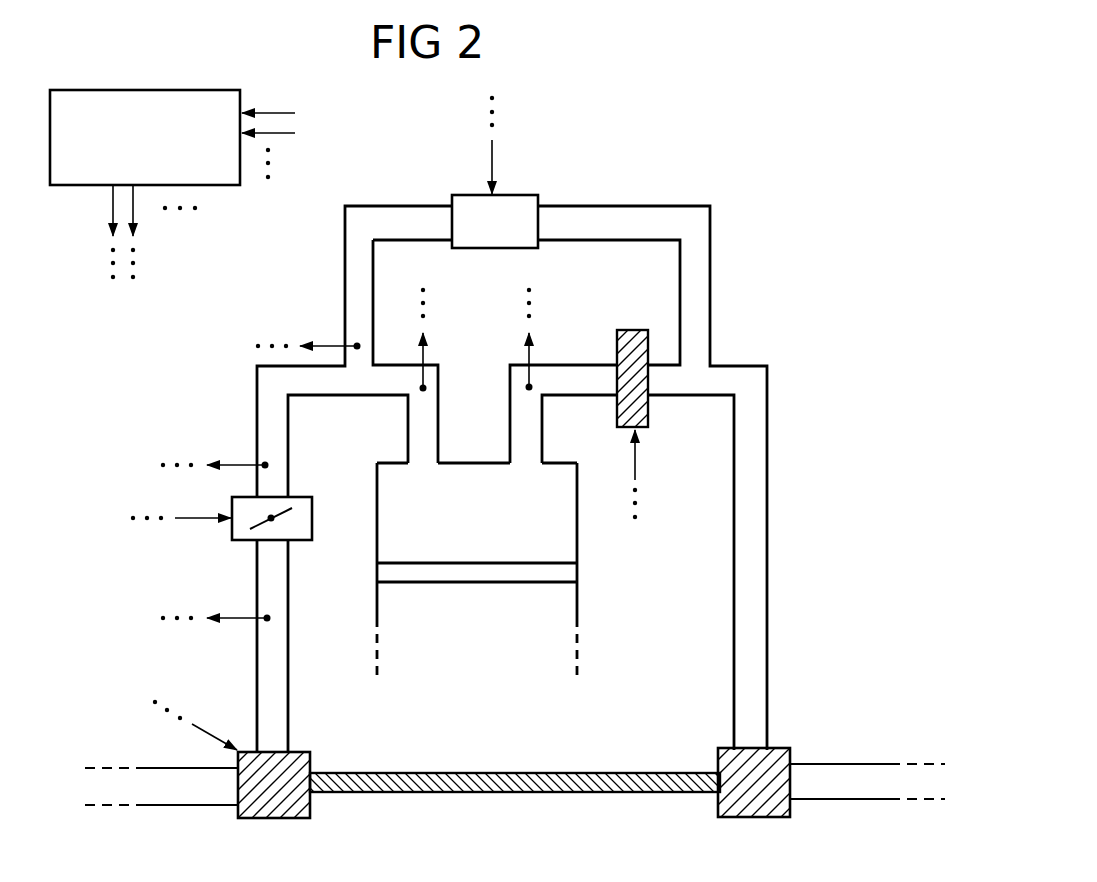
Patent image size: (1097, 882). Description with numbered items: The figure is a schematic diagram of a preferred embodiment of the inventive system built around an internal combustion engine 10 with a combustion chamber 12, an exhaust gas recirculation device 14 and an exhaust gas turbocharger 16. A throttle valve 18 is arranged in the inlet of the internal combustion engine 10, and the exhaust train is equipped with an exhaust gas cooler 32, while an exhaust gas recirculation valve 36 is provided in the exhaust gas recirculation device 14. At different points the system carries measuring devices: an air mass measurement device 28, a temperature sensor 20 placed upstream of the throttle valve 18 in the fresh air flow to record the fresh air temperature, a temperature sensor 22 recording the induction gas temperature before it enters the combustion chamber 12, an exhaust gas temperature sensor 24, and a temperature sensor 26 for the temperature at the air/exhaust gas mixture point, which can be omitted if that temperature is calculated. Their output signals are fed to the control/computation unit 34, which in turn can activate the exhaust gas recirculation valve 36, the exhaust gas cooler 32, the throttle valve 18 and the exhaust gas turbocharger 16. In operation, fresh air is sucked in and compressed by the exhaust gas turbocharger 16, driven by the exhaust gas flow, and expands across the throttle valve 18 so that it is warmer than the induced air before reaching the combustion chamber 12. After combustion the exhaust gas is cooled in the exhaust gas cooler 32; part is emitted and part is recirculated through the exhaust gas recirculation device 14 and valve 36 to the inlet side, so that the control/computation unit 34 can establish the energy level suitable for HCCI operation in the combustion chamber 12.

The internal combustion engine 10 is at (598, 617).
The combustion chamber 12 is at (497, 553).
The exhaust gas recirculation device 14 is at (657, 178).
The exhaust gas turbocharger 16 is at (515, 773).
The throttle valve 18 is at (300, 540).
The temperature sensor 20 is at (265, 465).
The temperature sensor 22 is at (423, 388).
The exhaust gas temperature sensor 24 is at (529, 387).
The temperature sensor 26 is at (357, 346).
The air mass measurement device 28 is at (267, 618).
The exhaust gas cooler 32 is at (632, 330).
The control/computation unit 34 is at (138, 90).
The exhaust gas recirculation valve 36 is at (518, 195).